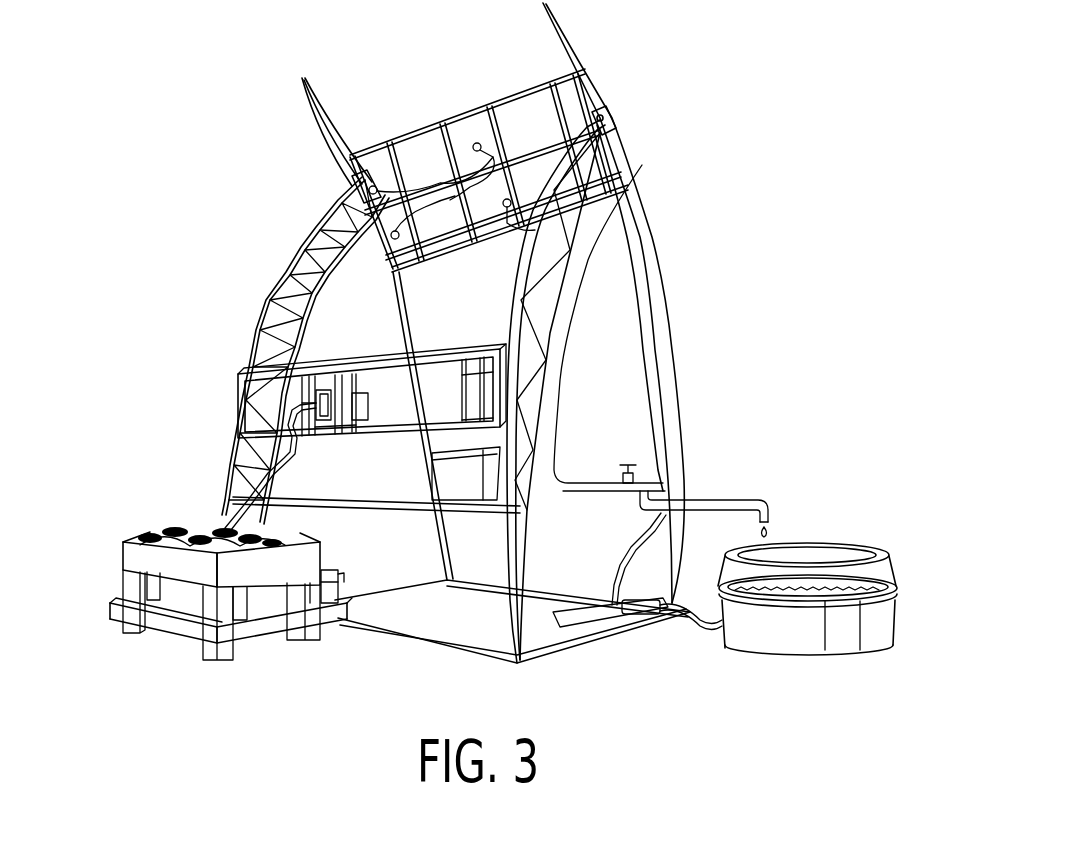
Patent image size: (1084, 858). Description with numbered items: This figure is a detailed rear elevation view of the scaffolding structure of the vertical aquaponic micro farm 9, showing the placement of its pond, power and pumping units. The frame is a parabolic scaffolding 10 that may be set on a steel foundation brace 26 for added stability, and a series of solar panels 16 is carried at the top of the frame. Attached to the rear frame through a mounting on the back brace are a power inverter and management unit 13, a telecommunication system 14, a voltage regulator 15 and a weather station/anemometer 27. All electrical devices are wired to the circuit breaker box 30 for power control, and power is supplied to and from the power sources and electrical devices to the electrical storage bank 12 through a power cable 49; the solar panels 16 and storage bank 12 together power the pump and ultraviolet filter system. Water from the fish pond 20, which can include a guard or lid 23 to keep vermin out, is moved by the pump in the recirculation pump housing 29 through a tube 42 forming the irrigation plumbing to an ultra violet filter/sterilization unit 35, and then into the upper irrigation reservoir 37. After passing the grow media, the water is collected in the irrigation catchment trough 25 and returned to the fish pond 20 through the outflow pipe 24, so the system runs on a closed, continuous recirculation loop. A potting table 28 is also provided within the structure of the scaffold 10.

The vertical aquaponic micro farm structure 9 is at (739, 57).
The parabolic scaffolding 10 is at (680, 364).
The electrical storage bank 12 is at (123, 550).
The power inverter and management unit 13 is at (343, 380).
The telecommunication system 14 is at (330, 388).
The voltage regulator 15 is at (365, 392).
The solar panels 16 is at (410, 133).
The fish pond 20 is at (795, 655).
The lid 23 is at (825, 545).
The outflow pipe 24 is at (730, 490).
The irrigation catchment trough 25 is at (455, 477).
The steel foundation brace 26 is at (507, 623).
The weather station/anemometer 27 is at (467, 395).
The potting table 28 is at (473, 517).
The recirculation pump housing 29 is at (637, 571).
The circuit breaker box 30 is at (337, 570).
The ultra violet filter/sterilization unit 35 is at (600, 197).
The upper irrigation reservoir 37 is at (385, 285).
The tube 42 is at (645, 265).
The power cable 49 is at (227, 504).